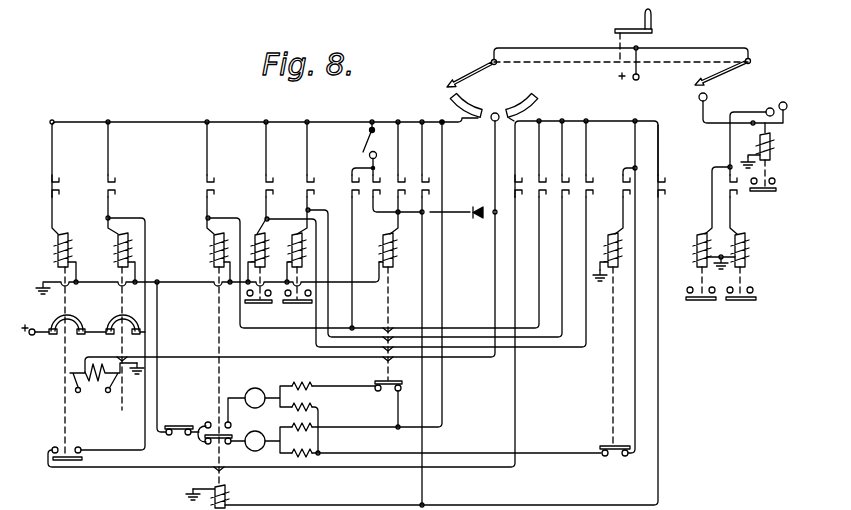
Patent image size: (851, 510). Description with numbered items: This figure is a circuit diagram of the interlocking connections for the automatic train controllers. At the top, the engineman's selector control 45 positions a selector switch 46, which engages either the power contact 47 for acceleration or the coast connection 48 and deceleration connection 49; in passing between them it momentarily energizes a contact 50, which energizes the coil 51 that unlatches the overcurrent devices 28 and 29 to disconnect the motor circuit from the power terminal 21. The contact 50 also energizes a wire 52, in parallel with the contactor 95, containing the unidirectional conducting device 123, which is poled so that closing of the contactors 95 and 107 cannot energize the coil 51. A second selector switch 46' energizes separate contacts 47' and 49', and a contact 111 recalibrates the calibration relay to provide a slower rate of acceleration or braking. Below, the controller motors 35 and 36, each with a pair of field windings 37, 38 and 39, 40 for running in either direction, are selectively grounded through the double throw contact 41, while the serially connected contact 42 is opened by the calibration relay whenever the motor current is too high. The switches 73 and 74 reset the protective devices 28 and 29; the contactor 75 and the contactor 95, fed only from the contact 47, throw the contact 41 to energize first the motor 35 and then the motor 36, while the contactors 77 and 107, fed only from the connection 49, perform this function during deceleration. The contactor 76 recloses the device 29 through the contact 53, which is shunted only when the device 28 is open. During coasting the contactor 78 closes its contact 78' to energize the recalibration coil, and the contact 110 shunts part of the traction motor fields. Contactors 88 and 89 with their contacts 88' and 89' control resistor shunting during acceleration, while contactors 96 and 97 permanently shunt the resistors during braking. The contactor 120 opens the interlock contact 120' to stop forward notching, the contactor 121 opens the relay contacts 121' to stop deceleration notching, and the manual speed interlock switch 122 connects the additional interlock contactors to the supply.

The power terminal 21 is at (32, 335).
The safety switch or circuit breaker 28 is at (51, 320).
The overcurrent device 29 is at (111, 318).
The controller motor 35 is at (255, 398).
The controller motor 36 is at (255, 441).
The field winding 37 is at (293, 383).
The field winding 38 is at (295, 428).
The field winding 39 is at (309, 406).
The field winding 40 is at (287, 453).
The double throw contact 41 is at (209, 423).
The serially connected contact 42 is at (176, 425).
The selector control 45 is at (637, 29).
The selector switch 46 is at (472, 63).
The selector switch 46' is at (733, 72).
The power contact 47 is at (468, 96).
The contact 47' is at (721, 95).
The coast connection 48 is at (768, 108).
The deceleration connection 49 is at (522, 94).
The contact 49' is at (791, 88).
The contact 50 is at (495, 112).
The coil 51 is at (96, 391).
The wire 52 is at (466, 209).
The contact 53 is at (65, 461).
The switch 73 is at (69, 228).
The switch 74 is at (115, 187).
The contactor 75 is at (214, 187).
The contactor 76 is at (525, 192).
The contactor 77 is at (550, 192).
The contactor 78 is at (722, 221).
The contact 78' is at (741, 311).
The contactor 88 is at (274, 228).
The contact 88' is at (258, 309).
The contactor 89 is at (314, 228).
The contact 89' is at (297, 309).
The resistance controller contactor 95 is at (432, 193).
The contactor 96 is at (574, 193).
The contactor 97 is at (590, 184).
The contactor 107 is at (666, 184).
The contact 110 is at (699, 300).
The contact 111 is at (766, 191).
The contactor 120 is at (403, 221).
The interlock contact 120' is at (375, 374).
The contactor 121 is at (611, 228).
The relay contacts 121' is at (609, 433).
The manual speed interlock switch 122 is at (365, 146).
The unidirectional conducting device 123 is at (478, 219).